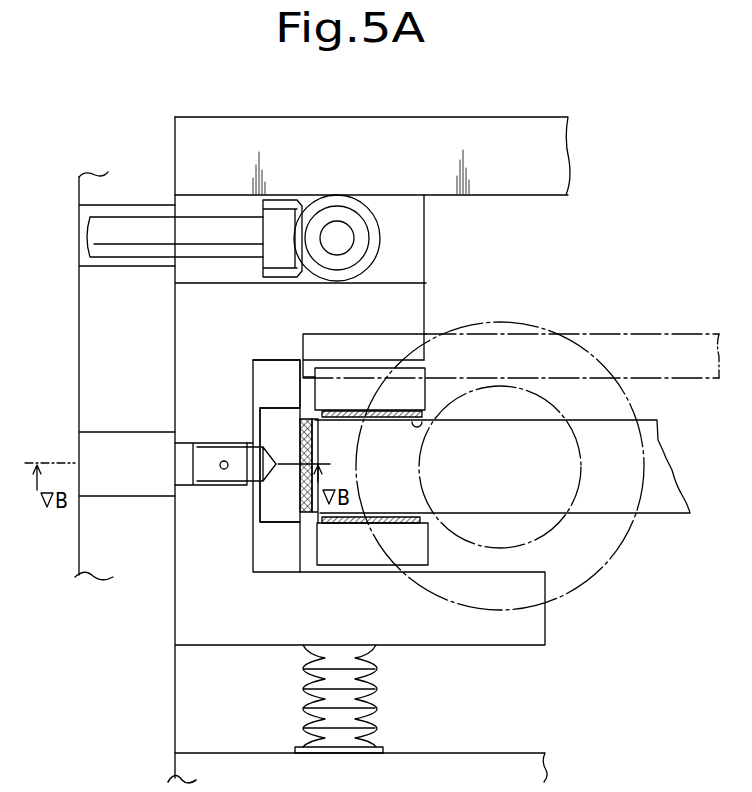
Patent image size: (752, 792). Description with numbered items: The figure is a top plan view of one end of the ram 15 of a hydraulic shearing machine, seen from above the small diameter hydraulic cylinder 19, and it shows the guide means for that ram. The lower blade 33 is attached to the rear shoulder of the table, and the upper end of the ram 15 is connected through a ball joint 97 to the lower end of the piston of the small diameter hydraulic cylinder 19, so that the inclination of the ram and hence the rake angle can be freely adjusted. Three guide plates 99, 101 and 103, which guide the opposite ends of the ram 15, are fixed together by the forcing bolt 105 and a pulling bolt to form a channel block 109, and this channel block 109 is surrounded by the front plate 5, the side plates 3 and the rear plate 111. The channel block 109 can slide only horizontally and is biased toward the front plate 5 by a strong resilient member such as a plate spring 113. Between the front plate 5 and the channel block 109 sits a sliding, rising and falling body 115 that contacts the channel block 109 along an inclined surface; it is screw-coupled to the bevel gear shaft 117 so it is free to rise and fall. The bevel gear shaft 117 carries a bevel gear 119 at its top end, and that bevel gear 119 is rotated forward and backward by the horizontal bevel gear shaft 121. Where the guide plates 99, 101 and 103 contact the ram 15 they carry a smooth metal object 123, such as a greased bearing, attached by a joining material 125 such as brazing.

The side plate 3 is at (103, 547).
The front plate 5 is at (527, 127).
The ram 15 is at (507, 466).
The small diameter hydraulic cylinder 19 is at (538, 358).
The lower blade 33 is at (647, 353).
The ball joint 97 is at (560, 537).
The guide plate 99 is at (278, 502).
The guide plate 101 is at (392, 345).
The guide plate 103 is at (338, 547).
The forcing bolt 105 is at (207, 472).
The channel block 109 is at (213, 588).
The rear plate 111 is at (497, 753).
The plate spring 113 is at (358, 705).
The rising and falling body 115 is at (381, 194).
The bevel gear shaft 117 is at (347, 234).
The bevel gear 119 is at (368, 262).
The horizontal bevel gear shaft 121 is at (110, 245).
The smooth metal object 123 is at (299, 428).
The joining material 125 is at (336, 406).